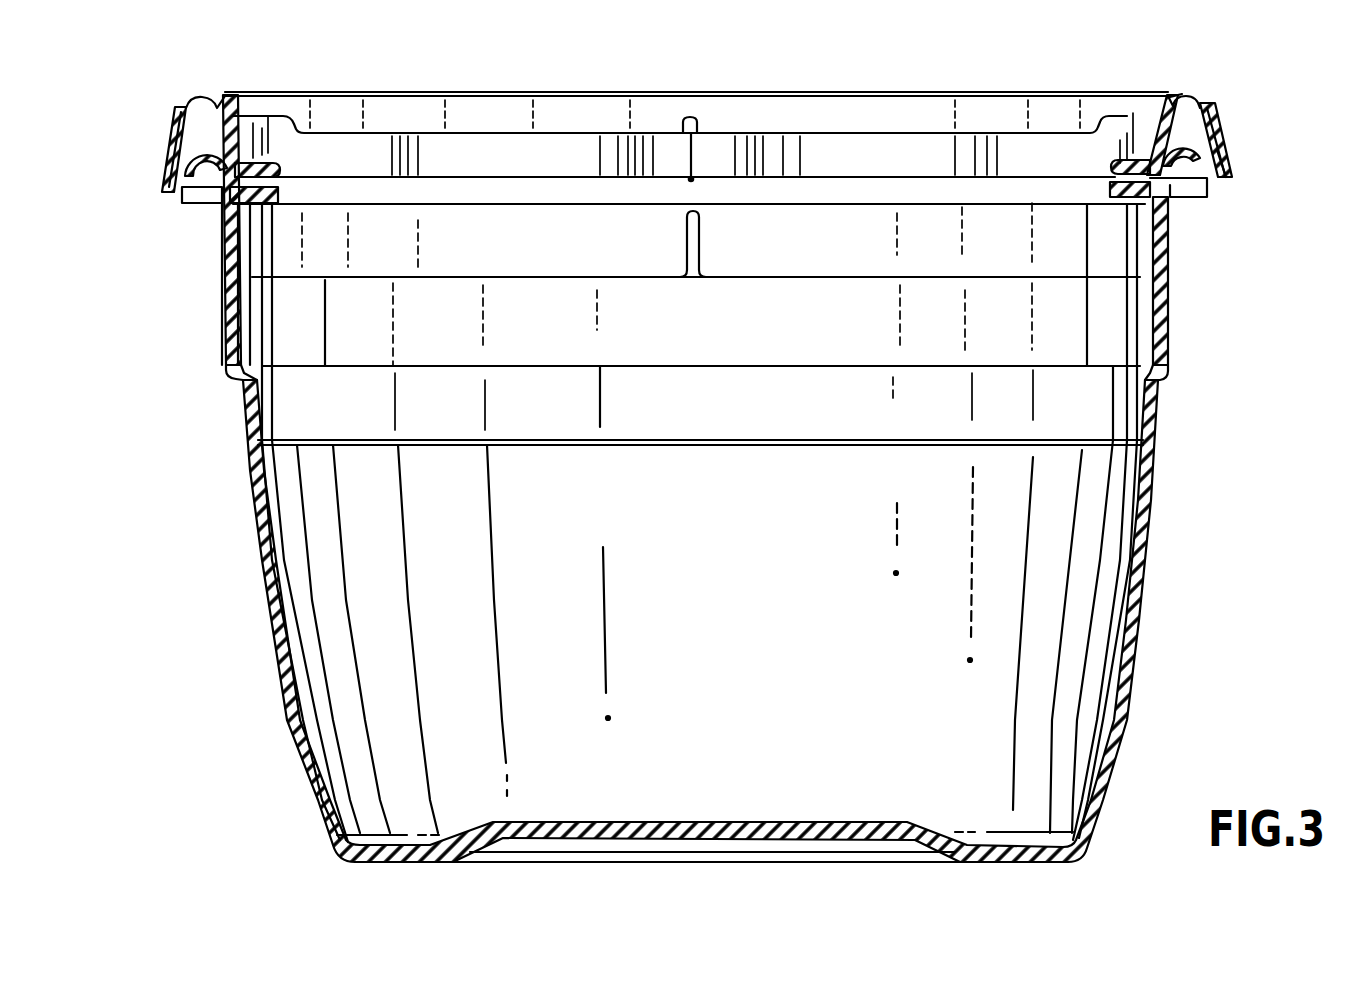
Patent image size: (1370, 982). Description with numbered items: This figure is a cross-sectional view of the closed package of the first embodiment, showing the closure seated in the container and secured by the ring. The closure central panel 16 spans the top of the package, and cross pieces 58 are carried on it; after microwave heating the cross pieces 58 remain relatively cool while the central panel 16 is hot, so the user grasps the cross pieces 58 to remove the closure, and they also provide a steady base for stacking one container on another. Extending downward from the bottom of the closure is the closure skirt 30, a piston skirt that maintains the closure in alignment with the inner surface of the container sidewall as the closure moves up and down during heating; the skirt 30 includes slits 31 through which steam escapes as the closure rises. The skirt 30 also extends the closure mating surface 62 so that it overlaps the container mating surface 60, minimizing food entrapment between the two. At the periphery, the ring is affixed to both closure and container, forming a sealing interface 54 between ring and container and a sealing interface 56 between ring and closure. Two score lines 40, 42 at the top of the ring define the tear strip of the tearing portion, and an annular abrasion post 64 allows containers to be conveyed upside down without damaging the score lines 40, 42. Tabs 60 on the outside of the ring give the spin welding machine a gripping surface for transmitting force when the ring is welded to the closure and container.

The closure central panel 16 is at (560, 203).
The closure skirt 30 is at (1147, 240).
The slits 31 is at (703, 230).
The score line 40 is at (190, 102).
The score line 42 is at (202, 100).
The interface 54 is at (1147, 153).
The interface 56 is at (1228, 153).
The cross pieces 58 is at (431, 129).
The tabs 60 is at (240, 221).
The closure mating surface 62 is at (225, 250).
The annular abrasion post 64 is at (1175, 100).